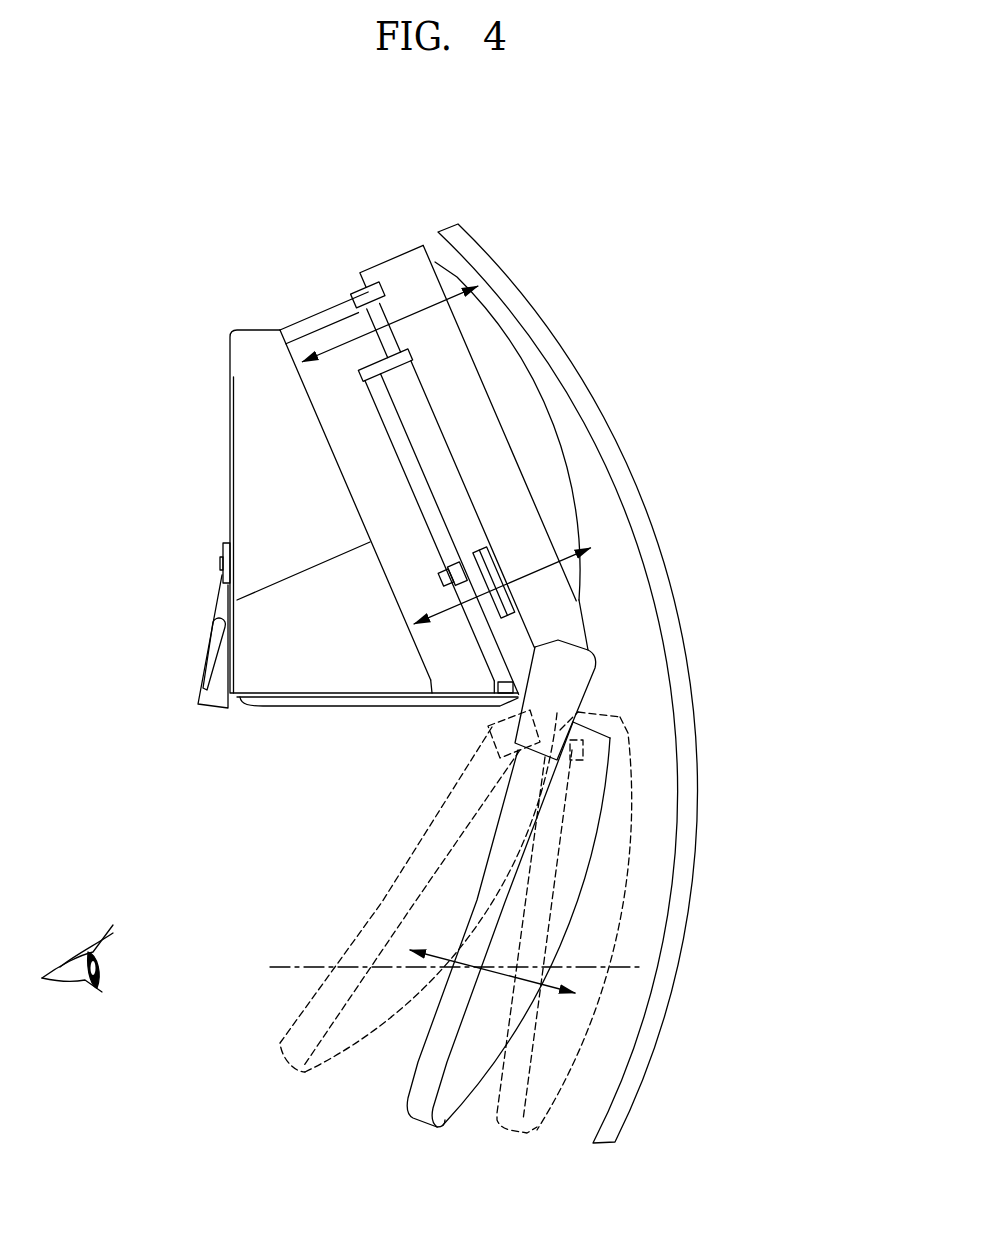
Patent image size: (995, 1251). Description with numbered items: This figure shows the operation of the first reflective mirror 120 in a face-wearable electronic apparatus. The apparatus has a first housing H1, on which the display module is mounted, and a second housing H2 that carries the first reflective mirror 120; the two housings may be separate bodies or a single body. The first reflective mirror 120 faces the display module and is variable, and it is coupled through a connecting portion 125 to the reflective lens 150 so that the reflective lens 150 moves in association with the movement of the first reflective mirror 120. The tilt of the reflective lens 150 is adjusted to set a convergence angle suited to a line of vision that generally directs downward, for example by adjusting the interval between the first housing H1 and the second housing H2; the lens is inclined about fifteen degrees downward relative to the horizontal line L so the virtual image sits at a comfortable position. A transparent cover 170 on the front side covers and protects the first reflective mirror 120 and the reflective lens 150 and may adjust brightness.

The first reflective mirror 120 is at (540, 418).
The connection bracket 125 is at (567, 672).
The reflective lens 150 is at (600, 838).
The cover 170 is at (510, 277).
The first housing H1 is at (327, 677).
The second housing H2 is at (405, 263).
The horizontal line L is at (442, 969).